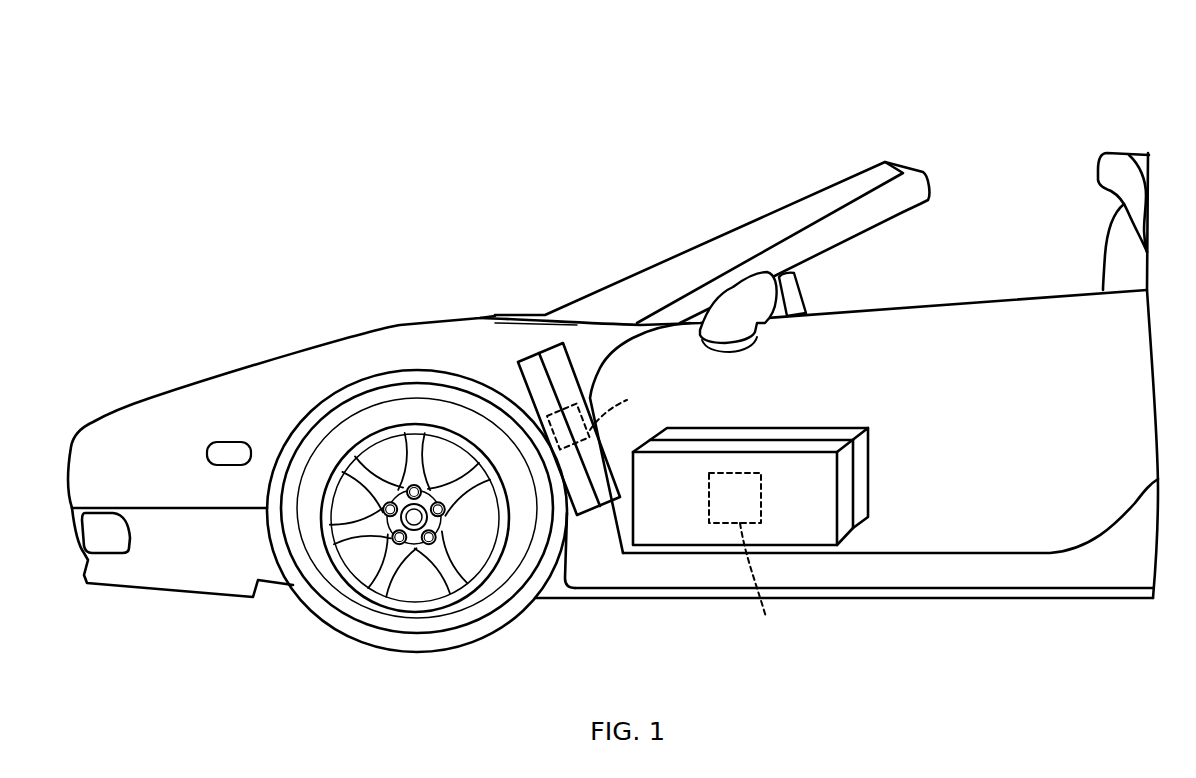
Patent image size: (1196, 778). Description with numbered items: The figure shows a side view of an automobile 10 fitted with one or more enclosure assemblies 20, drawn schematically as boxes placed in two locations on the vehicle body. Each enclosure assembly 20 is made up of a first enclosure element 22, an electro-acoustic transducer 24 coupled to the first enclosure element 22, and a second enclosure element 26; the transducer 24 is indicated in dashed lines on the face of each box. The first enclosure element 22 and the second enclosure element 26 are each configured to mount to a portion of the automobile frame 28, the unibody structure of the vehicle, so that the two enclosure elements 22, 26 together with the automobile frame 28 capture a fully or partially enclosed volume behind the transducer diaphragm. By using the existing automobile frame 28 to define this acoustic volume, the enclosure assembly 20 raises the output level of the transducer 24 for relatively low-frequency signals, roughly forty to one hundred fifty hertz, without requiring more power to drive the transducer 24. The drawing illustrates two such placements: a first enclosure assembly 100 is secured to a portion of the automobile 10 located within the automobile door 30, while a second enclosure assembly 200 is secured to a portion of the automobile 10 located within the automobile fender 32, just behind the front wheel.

The automobile 10 is at (906, 68).
The enclosure assembly 20 is at (709, 438).
The first enclosure element 22 is at (569, 356).
The electro-acoustic transducer 24 is at (660, 625).
The second enclosure element 26 is at (520, 358).
The automobile frame 28 is at (535, 336).
The automobile door 30 is at (942, 308).
The automobile fender 32 is at (503, 380).
The first enclosure assembly 100 is at (557, 289).
The second enclosure assembly 200 is at (903, 578).